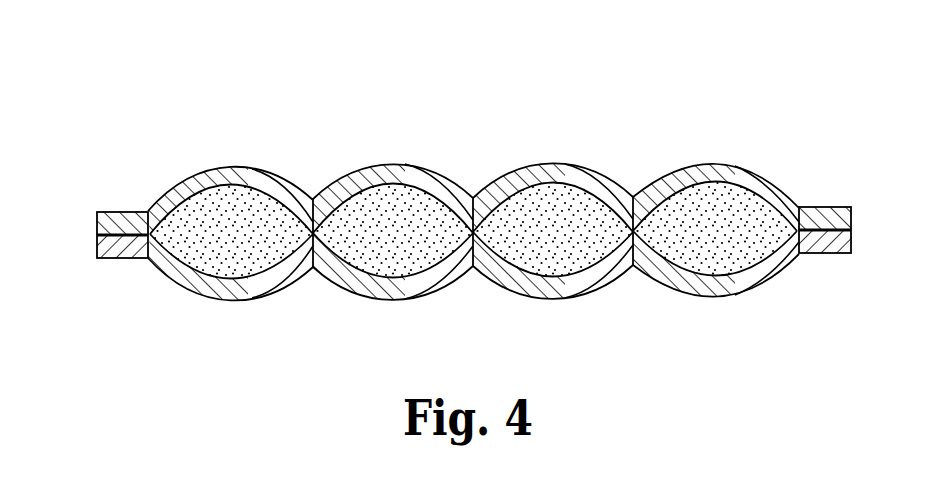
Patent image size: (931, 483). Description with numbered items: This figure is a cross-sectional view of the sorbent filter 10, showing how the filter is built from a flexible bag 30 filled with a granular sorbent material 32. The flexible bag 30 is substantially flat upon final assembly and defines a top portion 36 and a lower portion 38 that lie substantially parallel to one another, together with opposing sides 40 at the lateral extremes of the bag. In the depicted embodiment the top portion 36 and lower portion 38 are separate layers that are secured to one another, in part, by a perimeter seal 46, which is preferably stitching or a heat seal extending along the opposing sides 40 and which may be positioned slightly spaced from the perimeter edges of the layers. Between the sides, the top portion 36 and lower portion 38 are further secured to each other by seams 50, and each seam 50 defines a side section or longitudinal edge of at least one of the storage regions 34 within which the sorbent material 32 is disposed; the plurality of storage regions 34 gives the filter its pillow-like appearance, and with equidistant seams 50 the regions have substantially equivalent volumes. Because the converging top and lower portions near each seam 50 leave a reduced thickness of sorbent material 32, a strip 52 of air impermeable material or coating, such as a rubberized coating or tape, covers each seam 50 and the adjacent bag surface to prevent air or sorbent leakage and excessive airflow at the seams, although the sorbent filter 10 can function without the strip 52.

The sorbent filter 10 is at (662, 54).
The flexible bag 30 is at (100, 203).
The granular sorbent material 32 is at (211, 268).
The storage regions 34 is at (243, 200).
The top portion 36 is at (407, 168).
The lower portion 38 is at (372, 293).
The opposing sides 40 is at (97, 227).
The perimeter seal 46 is at (143, 258).
The seams 50 is at (311, 200).
The strip 52 is at (317, 199).